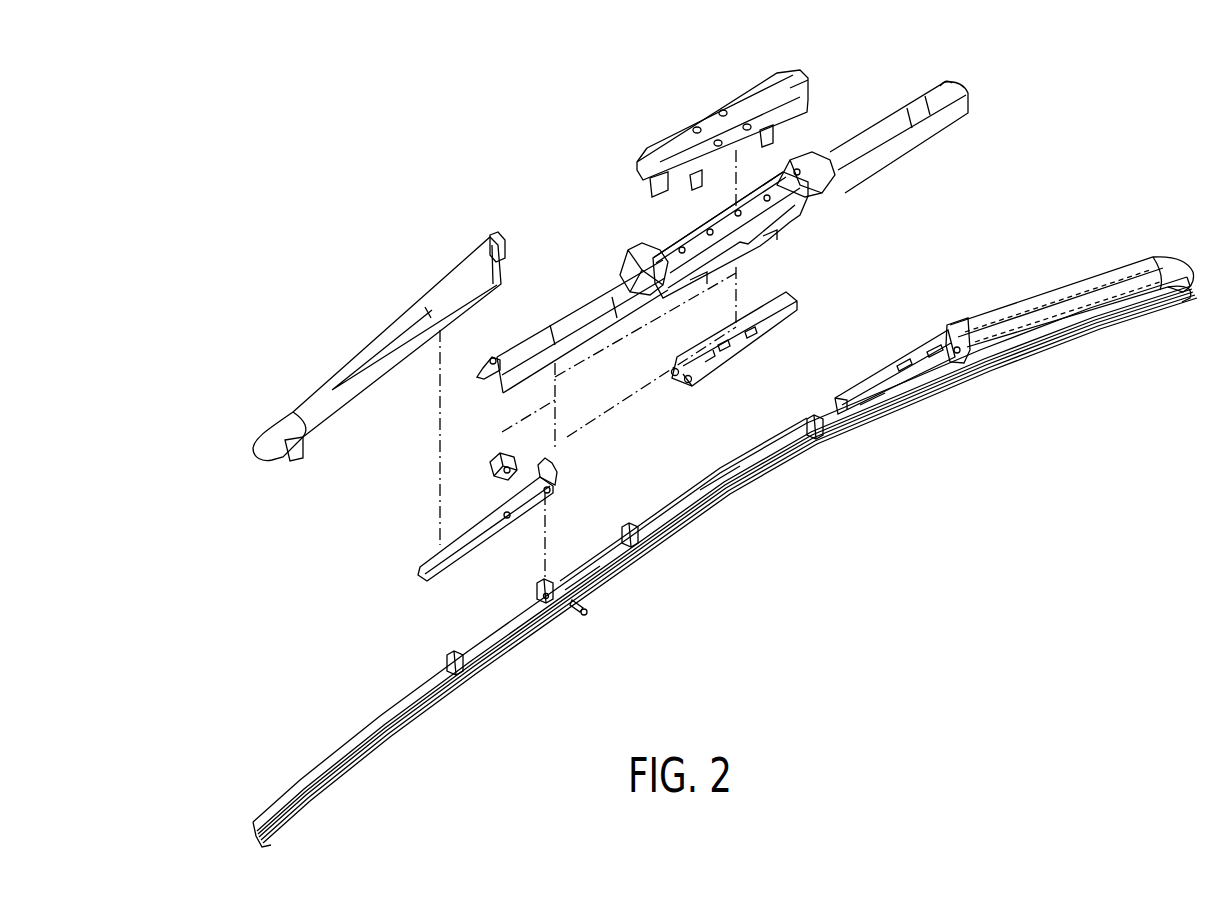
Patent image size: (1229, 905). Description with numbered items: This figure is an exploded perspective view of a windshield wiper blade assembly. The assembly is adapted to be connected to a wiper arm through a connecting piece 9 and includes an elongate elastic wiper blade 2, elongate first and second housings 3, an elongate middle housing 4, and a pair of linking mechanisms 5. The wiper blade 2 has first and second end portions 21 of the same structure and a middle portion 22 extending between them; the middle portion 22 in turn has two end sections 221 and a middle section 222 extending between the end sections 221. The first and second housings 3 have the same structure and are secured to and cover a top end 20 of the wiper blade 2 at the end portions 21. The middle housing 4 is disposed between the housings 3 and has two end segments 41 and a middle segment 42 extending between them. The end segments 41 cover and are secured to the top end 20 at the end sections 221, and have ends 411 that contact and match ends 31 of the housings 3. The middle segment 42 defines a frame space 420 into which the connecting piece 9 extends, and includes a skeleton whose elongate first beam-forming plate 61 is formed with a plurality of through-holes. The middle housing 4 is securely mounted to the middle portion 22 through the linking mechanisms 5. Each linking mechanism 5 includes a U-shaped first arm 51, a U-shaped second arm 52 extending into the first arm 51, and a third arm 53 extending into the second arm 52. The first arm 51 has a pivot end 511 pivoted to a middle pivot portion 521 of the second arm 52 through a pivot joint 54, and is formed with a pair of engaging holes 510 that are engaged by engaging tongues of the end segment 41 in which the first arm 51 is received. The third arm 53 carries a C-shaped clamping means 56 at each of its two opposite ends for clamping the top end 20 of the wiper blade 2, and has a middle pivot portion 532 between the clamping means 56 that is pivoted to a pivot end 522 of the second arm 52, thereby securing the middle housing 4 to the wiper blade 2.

The wiper blade 2 is at (708, 520).
The top end 20 is at (368, 722).
The first and second end portions 21 is at (402, 734).
The middle portion 22 is at (738, 526).
The end sections 221 is at (590, 588).
The middle section 222 is at (728, 497).
The first and second housings 3 is at (723, 321).
The ends 31 is at (497, 237).
The middle housing 4 is at (754, 224).
The end segments 41 is at (754, 224).
The ends 411 is at (492, 357).
The middle segment 42 is at (751, 235).
The frame space 420 is at (707, 247).
The first beam-forming plate 61 is at (793, 158).
The connecting piece 9 is at (656, 120).
The linking mechanisms 5 is at (579, 444).
The first arm 51 is at (774, 337).
The engaging holes 510 is at (710, 358).
The pivot end 511 is at (692, 383).
The second arm 52 is at (470, 508).
The middle pivot portion 521 is at (505, 513).
The pivot end 522 is at (536, 464).
The third arm 53 is at (663, 553).
The middle pivot portion 532 is at (544, 604).
The pivot joint 54 is at (490, 452).
The C-shaped clamping means 56 is at (641, 545).